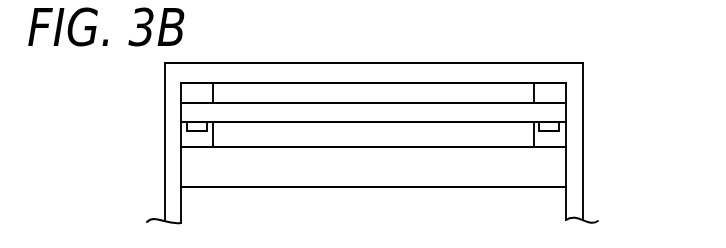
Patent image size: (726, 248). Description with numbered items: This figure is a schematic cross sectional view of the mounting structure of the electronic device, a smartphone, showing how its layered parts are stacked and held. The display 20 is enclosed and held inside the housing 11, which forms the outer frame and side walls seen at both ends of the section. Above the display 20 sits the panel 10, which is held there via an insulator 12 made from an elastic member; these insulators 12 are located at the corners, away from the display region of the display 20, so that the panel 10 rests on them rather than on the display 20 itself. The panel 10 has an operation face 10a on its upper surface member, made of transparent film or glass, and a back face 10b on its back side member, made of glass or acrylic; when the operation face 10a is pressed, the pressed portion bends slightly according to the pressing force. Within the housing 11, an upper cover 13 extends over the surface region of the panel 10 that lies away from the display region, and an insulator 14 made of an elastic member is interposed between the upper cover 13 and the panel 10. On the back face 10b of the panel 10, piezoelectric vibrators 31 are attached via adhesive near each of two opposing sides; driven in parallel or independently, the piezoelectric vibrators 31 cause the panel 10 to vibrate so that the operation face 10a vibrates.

The panel 10 is at (257, 112).
The operation face 10a is at (310, 103).
The back face 10b is at (303, 130).
The housing 11 is at (582, 180).
The insulator 12 is at (190, 141).
The upper cover 13 is at (518, 83).
The insulator 14 is at (555, 95).
The display 20 is at (188, 167).
The piezoelectric vibrator 31 is at (188, 127).